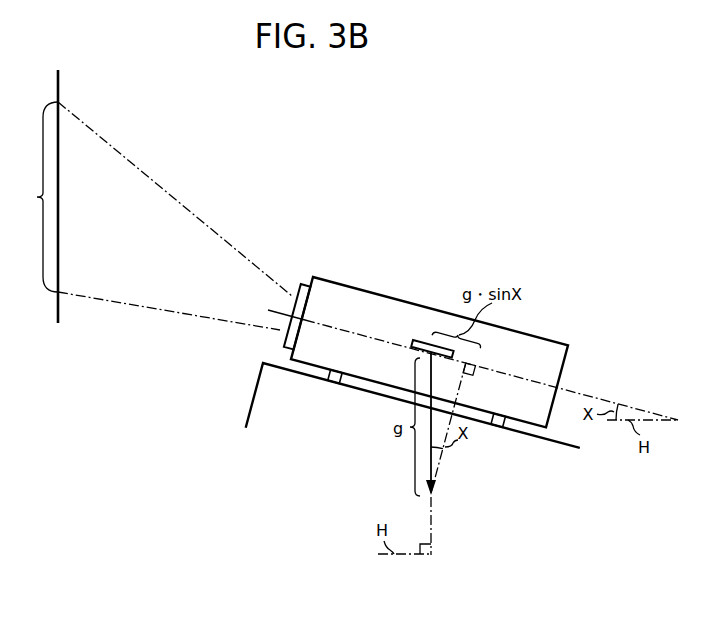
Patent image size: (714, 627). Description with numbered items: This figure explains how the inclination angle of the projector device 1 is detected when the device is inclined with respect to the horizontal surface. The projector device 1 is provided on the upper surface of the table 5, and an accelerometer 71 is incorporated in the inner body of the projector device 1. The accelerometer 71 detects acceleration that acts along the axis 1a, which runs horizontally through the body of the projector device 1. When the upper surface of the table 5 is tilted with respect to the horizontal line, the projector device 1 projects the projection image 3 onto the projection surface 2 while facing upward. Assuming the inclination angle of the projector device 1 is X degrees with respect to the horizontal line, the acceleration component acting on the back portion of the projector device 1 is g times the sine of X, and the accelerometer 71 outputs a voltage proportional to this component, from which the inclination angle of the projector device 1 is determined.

The projector device 1 is at (333, 219).
The axis 1a is at (602, 399).
The subject plane 2 is at (58, 85).
The projection image 3 is at (155, 216).
The table 5 is at (254, 403).
The accelerometer 71 is at (414, 341).